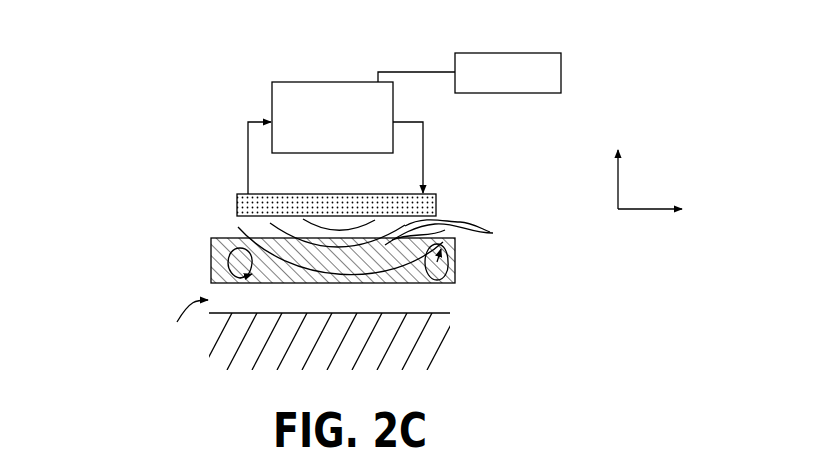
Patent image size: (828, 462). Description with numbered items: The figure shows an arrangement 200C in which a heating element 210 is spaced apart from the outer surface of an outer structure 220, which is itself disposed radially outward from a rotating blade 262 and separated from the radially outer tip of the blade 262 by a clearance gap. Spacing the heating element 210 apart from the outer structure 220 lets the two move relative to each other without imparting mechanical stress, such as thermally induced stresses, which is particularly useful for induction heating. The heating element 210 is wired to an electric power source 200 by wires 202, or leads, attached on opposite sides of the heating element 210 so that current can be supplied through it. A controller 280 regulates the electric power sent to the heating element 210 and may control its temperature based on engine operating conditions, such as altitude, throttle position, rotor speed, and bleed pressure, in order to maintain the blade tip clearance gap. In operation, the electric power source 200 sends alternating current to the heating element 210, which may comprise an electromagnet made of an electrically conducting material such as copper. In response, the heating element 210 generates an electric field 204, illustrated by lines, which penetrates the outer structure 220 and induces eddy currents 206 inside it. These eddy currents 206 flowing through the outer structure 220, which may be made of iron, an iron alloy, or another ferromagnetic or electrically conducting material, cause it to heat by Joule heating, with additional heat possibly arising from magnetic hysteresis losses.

The electrostatic chuck system 200C is at (180, 72).
The electric power source 200 is at (275, 82).
The wires 202 is at (428, 152).
The heating element 210 is at (437, 205).
The controller 280 is at (538, 94).
The electric field 204 is at (384, 247).
The eddy currents 206 is at (238, 250).
The outer structure 220 is at (211, 270).
The rotating blade 262 is at (225, 343).